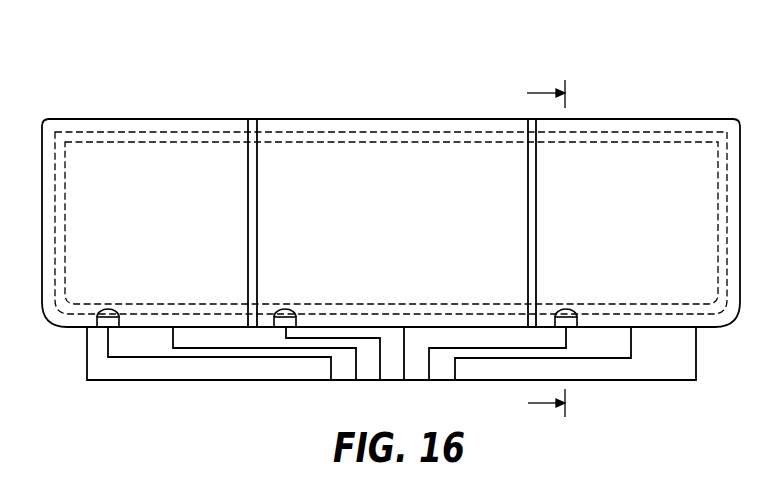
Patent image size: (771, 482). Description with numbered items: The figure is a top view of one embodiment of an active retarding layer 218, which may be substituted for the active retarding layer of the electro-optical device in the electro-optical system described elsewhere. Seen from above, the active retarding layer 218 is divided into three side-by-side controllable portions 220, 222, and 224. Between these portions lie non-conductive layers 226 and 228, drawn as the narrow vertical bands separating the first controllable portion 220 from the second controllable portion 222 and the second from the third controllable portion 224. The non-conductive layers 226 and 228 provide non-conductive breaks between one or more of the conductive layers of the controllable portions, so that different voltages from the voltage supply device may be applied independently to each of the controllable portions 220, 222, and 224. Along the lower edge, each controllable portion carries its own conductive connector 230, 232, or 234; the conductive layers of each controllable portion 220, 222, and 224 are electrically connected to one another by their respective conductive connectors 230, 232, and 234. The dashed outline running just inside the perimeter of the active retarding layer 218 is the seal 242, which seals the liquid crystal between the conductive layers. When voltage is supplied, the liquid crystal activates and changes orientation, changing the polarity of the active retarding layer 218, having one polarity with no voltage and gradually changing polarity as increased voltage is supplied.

The active retarding layer 218 is at (231, 66).
The controllable portion 220 is at (138, 163).
The controllable portion 222 is at (388, 163).
The controllable portion 224 is at (675, 165).
The non-conductive layer 226 is at (248, 225).
The non-conductive layer 228 is at (528, 223).
The conductive connector 230 is at (112, 322).
The conductive connector 232 is at (295, 320).
The conductive connector 234 is at (567, 322).
The seal 242 is at (592, 138).